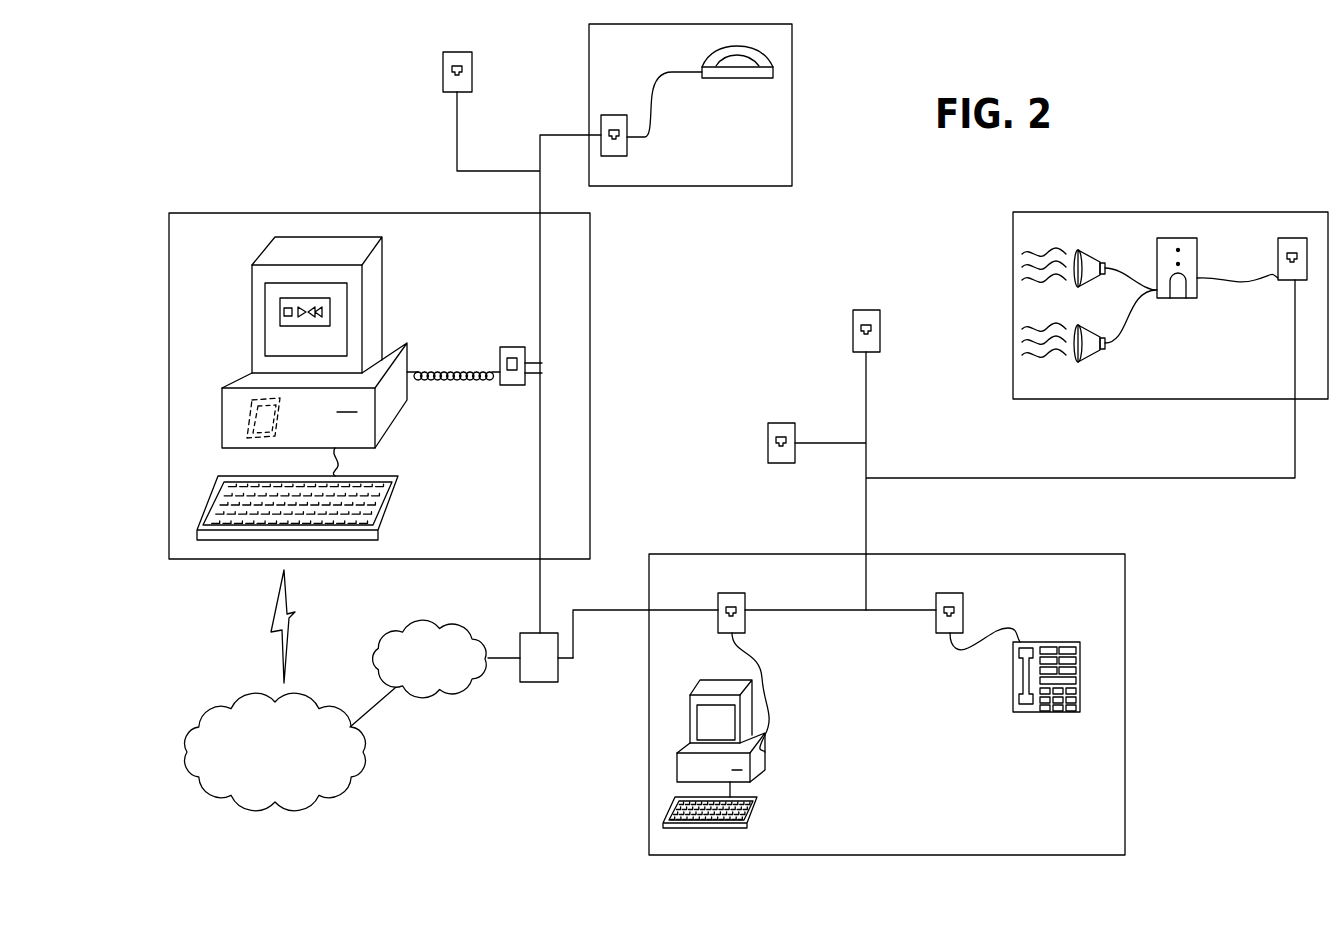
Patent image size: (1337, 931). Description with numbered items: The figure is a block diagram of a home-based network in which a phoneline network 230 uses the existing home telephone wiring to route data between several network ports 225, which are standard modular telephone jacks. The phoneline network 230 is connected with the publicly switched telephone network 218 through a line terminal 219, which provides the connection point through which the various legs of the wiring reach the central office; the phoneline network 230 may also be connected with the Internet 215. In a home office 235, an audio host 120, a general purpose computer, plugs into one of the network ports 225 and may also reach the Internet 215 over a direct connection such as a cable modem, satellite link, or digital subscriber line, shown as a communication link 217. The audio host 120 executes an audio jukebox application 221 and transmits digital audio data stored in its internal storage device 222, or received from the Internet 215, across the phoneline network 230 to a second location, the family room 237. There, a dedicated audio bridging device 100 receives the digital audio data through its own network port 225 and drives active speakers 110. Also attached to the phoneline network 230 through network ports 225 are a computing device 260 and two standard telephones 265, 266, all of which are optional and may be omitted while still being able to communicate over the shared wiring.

The audio bridging device 100 is at (1174, 298).
The active speakers 110 is at (1087, 289).
The audio host 120 is at (394, 427).
The Internet 215 is at (360, 769).
The communication links 217 is at (296, 626).
The publicly switched telephone network (PSTN) 218 is at (435, 692).
The line terminal 219 is at (545, 682).
The application 221 is at (280, 310).
The internal storage device 222 is at (247, 431).
The network ports 225 is at (443, 74).
The phoneline network 230 is at (542, 440).
The home office 235 is at (494, 526).
The family room 237 is at (1252, 385).
The computing device 260 is at (767, 750).
The telephone 265 is at (1032, 712).
The telephone 266 is at (728, 79).